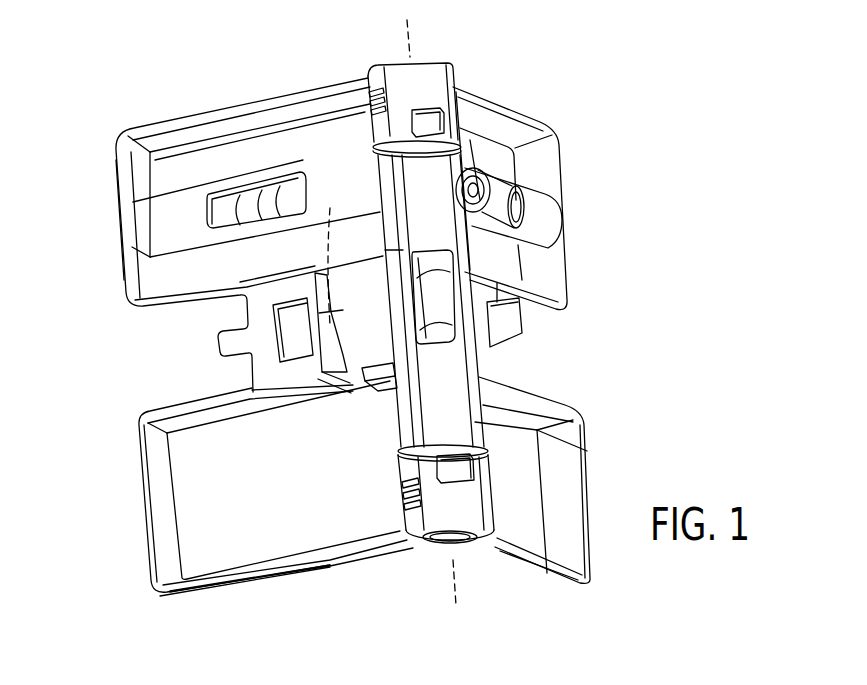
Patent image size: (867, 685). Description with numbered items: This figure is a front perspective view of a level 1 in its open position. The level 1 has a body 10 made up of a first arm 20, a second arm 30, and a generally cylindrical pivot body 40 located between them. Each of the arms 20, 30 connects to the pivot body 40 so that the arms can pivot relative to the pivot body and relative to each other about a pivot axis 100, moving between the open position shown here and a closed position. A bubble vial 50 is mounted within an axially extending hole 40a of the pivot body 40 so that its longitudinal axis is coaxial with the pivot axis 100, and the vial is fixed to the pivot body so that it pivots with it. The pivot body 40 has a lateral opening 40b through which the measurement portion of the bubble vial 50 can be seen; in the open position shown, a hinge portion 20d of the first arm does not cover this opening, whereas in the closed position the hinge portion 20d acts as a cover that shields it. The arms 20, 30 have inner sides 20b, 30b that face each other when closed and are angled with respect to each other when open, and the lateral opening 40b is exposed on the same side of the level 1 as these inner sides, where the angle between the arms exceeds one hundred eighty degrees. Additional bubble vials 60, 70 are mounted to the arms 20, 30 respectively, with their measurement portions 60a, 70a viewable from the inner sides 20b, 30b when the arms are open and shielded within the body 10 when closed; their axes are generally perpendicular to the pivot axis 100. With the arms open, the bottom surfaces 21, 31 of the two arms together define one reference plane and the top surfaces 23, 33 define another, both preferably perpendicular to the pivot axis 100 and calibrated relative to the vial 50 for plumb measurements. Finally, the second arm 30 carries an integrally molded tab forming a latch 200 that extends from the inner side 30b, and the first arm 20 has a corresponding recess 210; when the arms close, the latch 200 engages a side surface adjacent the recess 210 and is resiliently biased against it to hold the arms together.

The level 1 is at (338, 586).
The body 10 is at (273, 609).
The first arm 20 is at (210, 152).
The inner side 20b is at (260, 112).
The hinge portion 20d is at (587, 451).
The bottom surface 21 is at (272, 577).
The top surface 23 is at (148, 127).
The second arm 30 is at (517, 133).
The inner side 30b is at (532, 134).
The bottom surface 31 is at (548, 580).
The top surface 33 is at (477, 90).
The pivot body 40 is at (427, 73).
The axially extending hole 40a is at (442, 538).
The lateral opening 40b is at (413, 302).
The bubble vial 50 is at (440, 293).
The bubble vial 60 is at (268, 190).
The measurement portion 60a is at (309, 132).
The bubble vial 70 is at (493, 200).
The measurement portion 70a is at (570, 197).
The pivot axis 100 is at (460, 590).
The latch 200 is at (523, 323).
The recess 210 is at (341, 252).